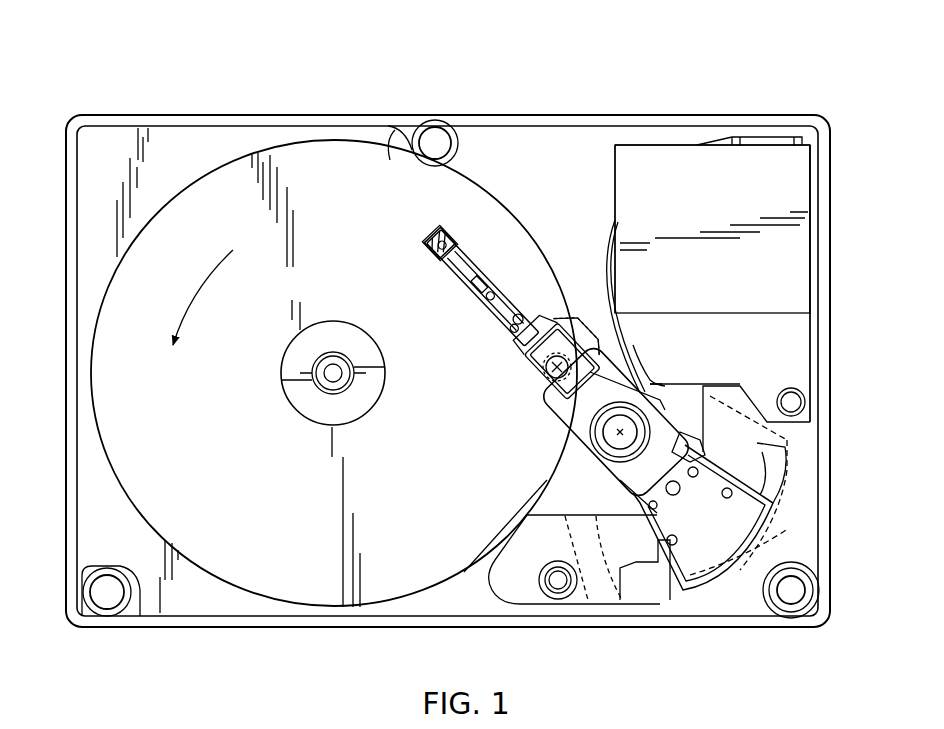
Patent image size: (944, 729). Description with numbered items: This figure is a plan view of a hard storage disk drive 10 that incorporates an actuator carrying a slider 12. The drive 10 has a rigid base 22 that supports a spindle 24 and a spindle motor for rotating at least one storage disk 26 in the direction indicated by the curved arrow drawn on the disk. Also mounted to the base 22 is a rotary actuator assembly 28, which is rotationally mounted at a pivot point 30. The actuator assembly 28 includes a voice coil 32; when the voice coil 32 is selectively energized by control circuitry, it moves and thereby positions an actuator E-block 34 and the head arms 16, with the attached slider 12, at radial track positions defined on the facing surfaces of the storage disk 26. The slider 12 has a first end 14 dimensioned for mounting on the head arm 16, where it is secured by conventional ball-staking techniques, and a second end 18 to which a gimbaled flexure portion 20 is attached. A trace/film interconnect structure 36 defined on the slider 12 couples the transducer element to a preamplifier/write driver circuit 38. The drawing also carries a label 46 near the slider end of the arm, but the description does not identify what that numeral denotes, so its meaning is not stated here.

The hard storage disk drive 10 is at (108, 665).
The slider 12 is at (500, 283).
The first end 14 is at (543, 368).
The head arm 16 is at (532, 390).
The second end 18 is at (437, 258).
The gimbaled flexure portion 20 is at (416, 246).
The rigid base 22 is at (187, 628).
The spindle 24 is at (337, 336).
The storage disk 26 is at (345, 168).
The rotary actuator assembly 28 is at (676, 398).
The pivot point 30 is at (617, 433).
The voice coil 32 is at (762, 503).
The actuator E-block 34 is at (633, 345).
The trace/film interconnect structure 36 is at (477, 265).
The preamplifier/write driver circuit 38 is at (660, 393).
The slider 46 is at (433, 233).